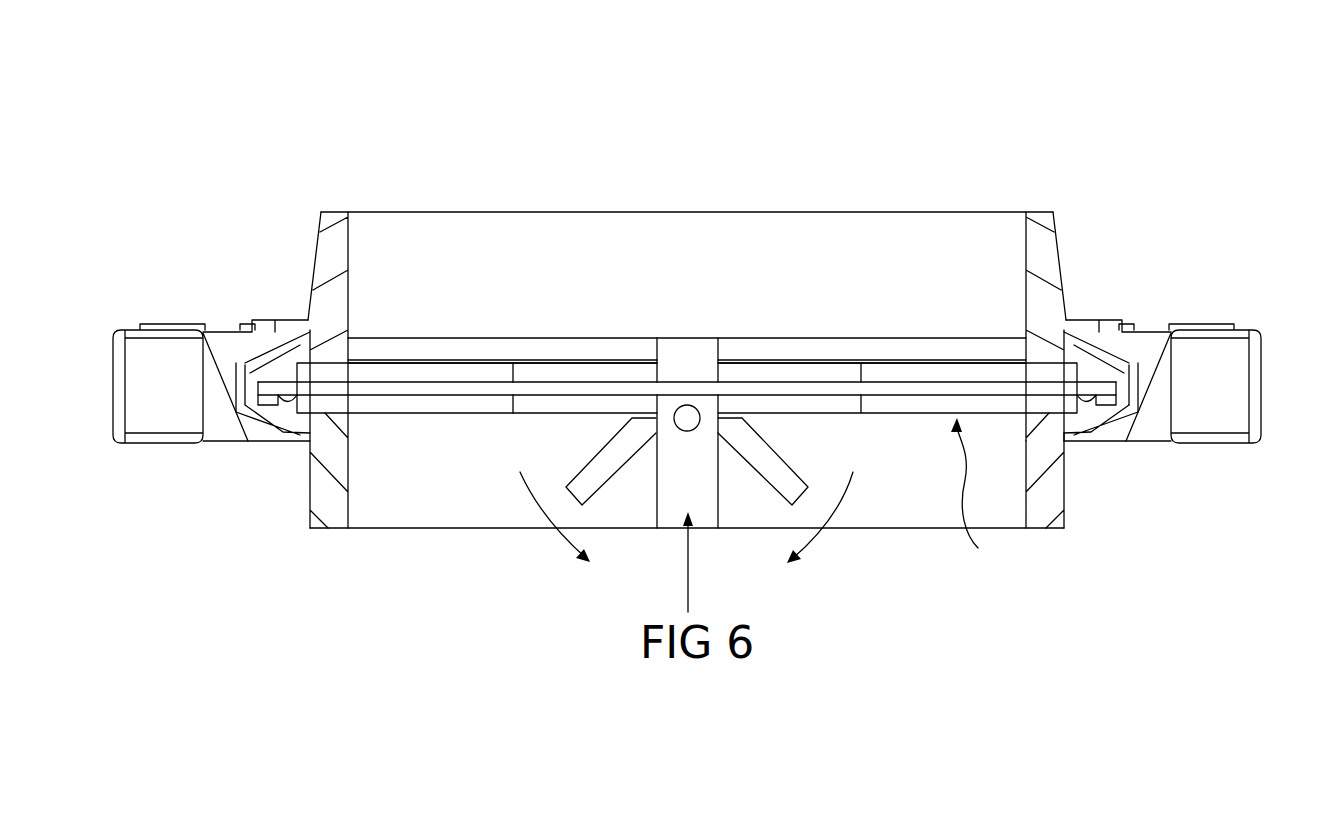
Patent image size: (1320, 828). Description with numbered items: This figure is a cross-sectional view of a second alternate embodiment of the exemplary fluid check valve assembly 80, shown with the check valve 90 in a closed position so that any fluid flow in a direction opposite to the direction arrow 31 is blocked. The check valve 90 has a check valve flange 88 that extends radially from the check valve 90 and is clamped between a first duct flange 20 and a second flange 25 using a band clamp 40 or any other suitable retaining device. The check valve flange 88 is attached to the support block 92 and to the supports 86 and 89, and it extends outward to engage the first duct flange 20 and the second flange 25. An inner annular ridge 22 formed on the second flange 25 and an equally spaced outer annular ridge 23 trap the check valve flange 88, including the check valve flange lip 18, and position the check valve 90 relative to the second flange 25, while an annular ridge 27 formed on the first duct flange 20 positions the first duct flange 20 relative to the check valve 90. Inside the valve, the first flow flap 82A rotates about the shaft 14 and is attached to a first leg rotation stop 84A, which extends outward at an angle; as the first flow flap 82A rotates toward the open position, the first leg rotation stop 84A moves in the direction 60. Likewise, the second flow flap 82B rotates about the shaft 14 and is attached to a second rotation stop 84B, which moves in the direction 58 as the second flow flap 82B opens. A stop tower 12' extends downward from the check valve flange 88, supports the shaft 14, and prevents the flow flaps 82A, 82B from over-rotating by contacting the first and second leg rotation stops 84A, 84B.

The fluid check valve assembly 80 is at (1015, 182).
The first duct flange 20 is at (1047, 263).
The second flange 25 is at (1055, 507).
The band clamp 40 is at (1225, 357).
The annular ridge 27 is at (1125, 400).
The check valve flange lip 18 is at (1105, 400).
The outer annular ridge 23 is at (1123, 417).
The inner annular ridge 22 is at (1078, 408).
The support 86 is at (433, 370).
The support 89 is at (438, 402).
The check valve flange 88 is at (478, 388).
The first flow flap 82A is at (603, 350).
The second flow flap 82B is at (845, 350).
The support block 92 is at (682, 355).
The rotor body 12' is at (670, 502).
The shaft 14 is at (688, 420).
The first leg rotation stop 84A is at (763, 463).
The second rotation stop 84B is at (597, 477).
The direction arrow 31 is at (688, 575).
The direction 58 is at (556, 537).
The direction 60 is at (817, 538).
The check valve 90 is at (977, 491).